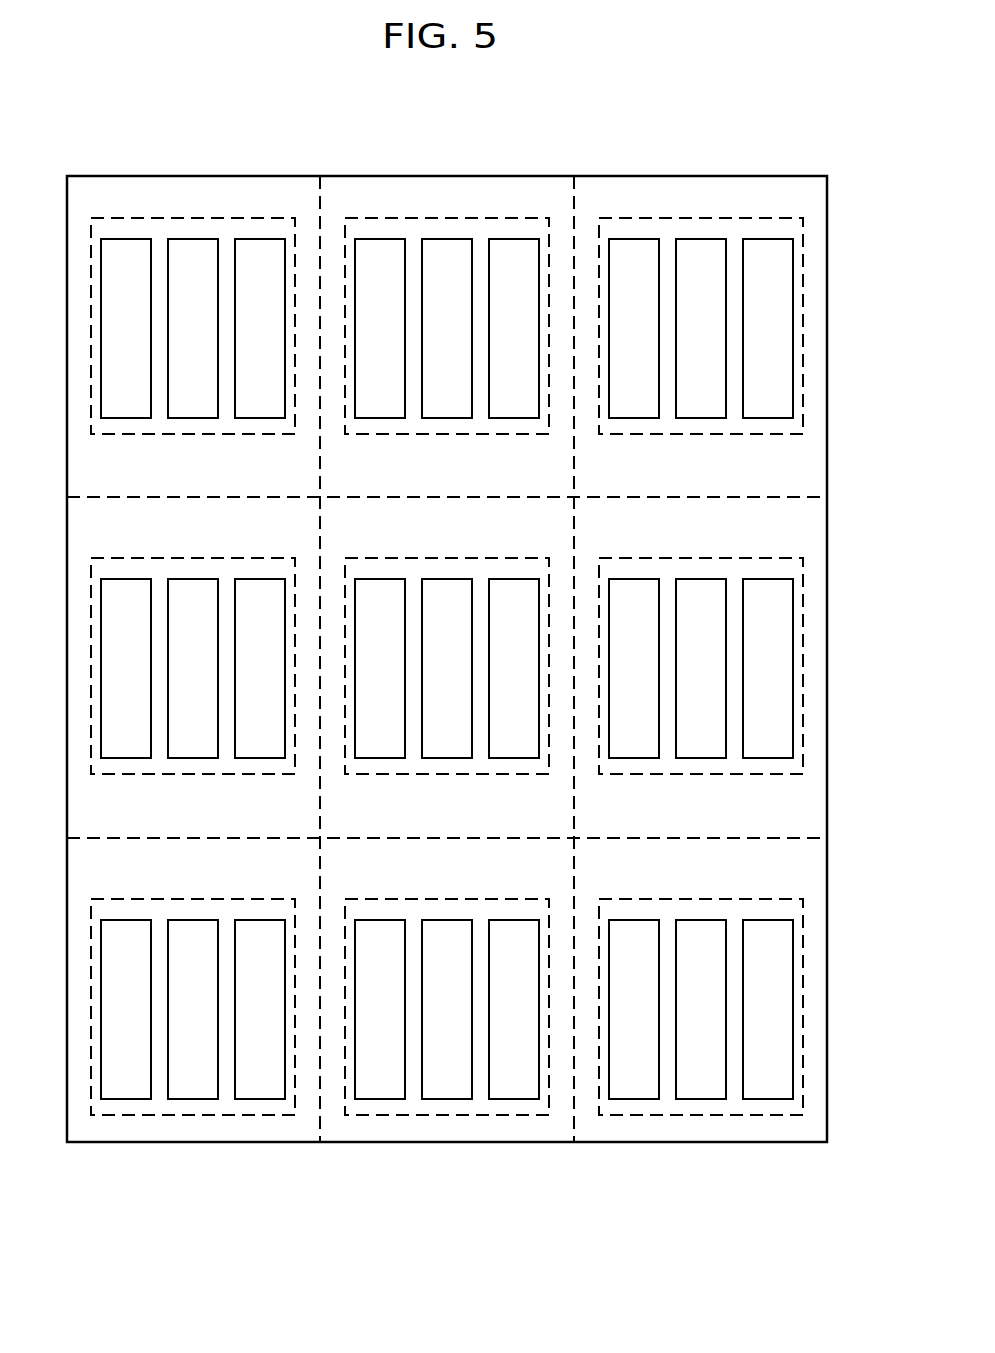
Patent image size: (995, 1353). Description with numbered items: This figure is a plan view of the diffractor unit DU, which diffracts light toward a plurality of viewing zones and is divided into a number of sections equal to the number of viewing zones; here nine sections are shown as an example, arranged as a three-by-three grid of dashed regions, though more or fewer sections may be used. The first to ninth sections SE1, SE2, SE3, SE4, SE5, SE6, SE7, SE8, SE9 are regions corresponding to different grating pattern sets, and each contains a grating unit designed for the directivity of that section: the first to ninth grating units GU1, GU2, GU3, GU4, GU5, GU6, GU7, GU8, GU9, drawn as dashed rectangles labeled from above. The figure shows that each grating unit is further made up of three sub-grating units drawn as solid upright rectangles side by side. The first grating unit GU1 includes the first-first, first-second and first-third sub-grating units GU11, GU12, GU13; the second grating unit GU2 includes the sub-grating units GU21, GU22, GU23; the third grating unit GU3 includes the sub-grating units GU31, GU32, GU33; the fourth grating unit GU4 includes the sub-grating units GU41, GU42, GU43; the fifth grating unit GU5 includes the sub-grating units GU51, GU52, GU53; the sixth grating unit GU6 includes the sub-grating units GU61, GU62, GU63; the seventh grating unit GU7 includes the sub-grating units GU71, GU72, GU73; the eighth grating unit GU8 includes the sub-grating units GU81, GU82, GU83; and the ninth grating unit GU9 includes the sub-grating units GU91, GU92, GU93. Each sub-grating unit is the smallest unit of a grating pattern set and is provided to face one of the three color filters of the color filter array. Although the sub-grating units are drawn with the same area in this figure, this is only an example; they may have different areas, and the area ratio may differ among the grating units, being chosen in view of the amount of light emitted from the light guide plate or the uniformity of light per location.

The diffractor unit DU is at (829, 144).
The first grating unit GU1 is at (193, 218).
The second grating unit GU2 is at (447, 218).
The third grating unit GU3 is at (701, 218).
The fourth grating unit GU4 is at (193, 558).
The fifth grating unit GU5 is at (447, 558).
The sixth grating unit GU6 is at (701, 558).
The seventh grating unit GU7 is at (193, 899).
The eighth grating unit GU8 is at (447, 899).
The ninth grating unit GU9 is at (701, 899).
The first section SE1 is at (292, 208).
The second section SE2 is at (546, 208).
The third section SE3 is at (800, 208).
The fourth section SE4 is at (292, 548).
The fifth section SE5 is at (546, 548).
The sixth section SE6 is at (800, 548).
The seventh section SE7 is at (292, 889).
The eighth section SE8 is at (546, 889).
The ninth section SE9 is at (800, 889).
The first-first sub-grating unit GU11 is at (126, 418).
The first-second sub-grating unit GU12 is at (193, 418).
The first-third sub-grating unit GU13 is at (260, 418).
The second-first sub-grating unit GU21 is at (380, 418).
The second-second sub-grating unit GU22 is at (447, 418).
The second-third sub-grating unit GU23 is at (514, 418).
The third-first sub-grating unit GU31 is at (634, 418).
The third-second sub-grating unit GU32 is at (701, 418).
The third-third sub-grating unit GU33 is at (768, 418).
The fourth-first sub-grating unit GU41 is at (126, 758).
The fourth-second sub-grating unit GU42 is at (193, 758).
The fourth-third sub-grating unit GU43 is at (260, 758).
The fifth-first sub-grating unit GU51 is at (380, 758).
The fifth-second sub-grating unit GU52 is at (447, 758).
The fifth-third sub-grating unit GU53 is at (514, 758).
The sixth-first sub-grating unit GU61 is at (634, 758).
The sixth-second sub-grating unit GU62 is at (701, 758).
The sixth-third sub-grating unit GU63 is at (768, 758).
The seventh-first sub-grating unit GU71 is at (126, 1099).
The seventh-second sub-grating unit GU72 is at (193, 1099).
The seventh-third sub-grating unit GU73 is at (260, 1099).
The eighth-first sub-grating unit GU81 is at (380, 1099).
The eighth-second sub-grating unit GU82 is at (447, 1099).
The eighth-third sub-grating unit GU83 is at (514, 1099).
The ninth-first sub-grating unit GU91 is at (634, 1099).
The ninth-second sub-grating unit GU92 is at (701, 1099).
The ninth-third sub-grating unit GU93 is at (768, 1099).